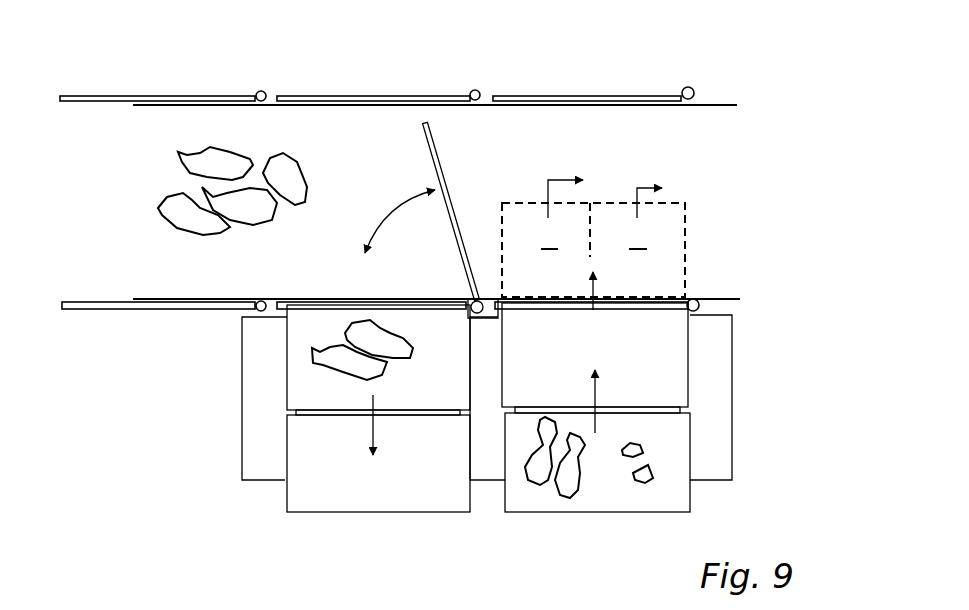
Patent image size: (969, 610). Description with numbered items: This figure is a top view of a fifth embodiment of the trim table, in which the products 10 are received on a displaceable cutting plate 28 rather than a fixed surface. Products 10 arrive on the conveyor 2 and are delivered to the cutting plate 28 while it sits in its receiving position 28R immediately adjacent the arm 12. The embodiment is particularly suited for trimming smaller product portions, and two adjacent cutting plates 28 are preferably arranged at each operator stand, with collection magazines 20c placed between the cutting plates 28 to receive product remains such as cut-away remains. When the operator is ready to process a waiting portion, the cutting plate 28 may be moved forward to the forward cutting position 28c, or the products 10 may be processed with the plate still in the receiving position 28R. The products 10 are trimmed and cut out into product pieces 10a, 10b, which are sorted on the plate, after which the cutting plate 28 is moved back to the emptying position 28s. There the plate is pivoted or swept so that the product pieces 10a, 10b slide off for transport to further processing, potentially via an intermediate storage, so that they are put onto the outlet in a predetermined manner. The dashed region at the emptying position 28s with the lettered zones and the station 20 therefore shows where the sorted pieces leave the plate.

The conveyor 2 is at (607, 117).
The products 10 is at (313, 363).
The product piece 10a is at (545, 490).
The product piece 10b is at (663, 457).
The arm 12 is at (432, 147).
The sorting station 20 is at (720, 238).
The collection magazine 20c is at (252, 392).
The cutting plate 28 is at (293, 323).
The forward cutting position 28c is at (405, 500).
The receiving position 28R is at (303, 377).
The emptying position 28s is at (757, 278).